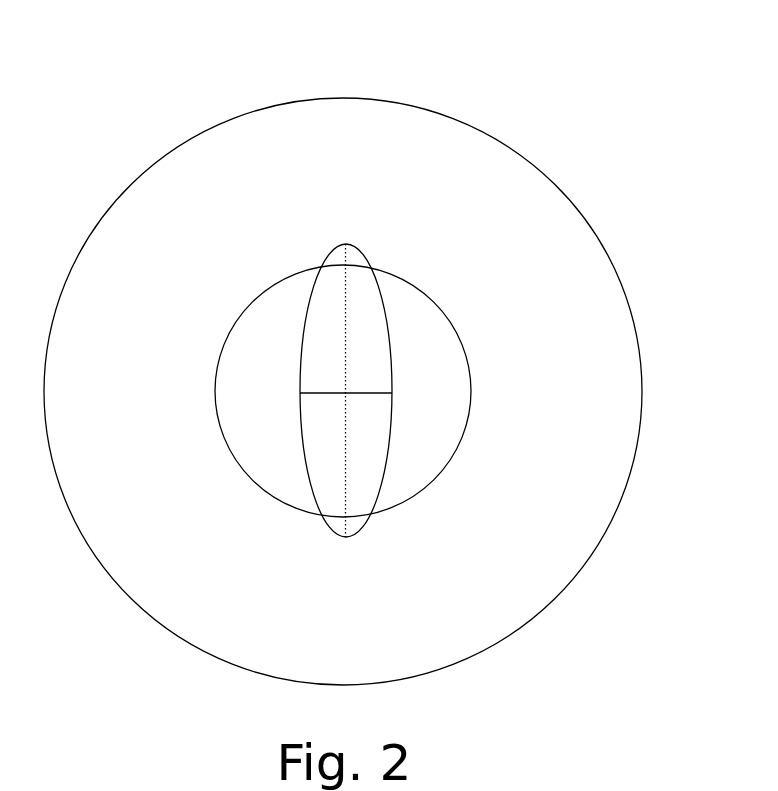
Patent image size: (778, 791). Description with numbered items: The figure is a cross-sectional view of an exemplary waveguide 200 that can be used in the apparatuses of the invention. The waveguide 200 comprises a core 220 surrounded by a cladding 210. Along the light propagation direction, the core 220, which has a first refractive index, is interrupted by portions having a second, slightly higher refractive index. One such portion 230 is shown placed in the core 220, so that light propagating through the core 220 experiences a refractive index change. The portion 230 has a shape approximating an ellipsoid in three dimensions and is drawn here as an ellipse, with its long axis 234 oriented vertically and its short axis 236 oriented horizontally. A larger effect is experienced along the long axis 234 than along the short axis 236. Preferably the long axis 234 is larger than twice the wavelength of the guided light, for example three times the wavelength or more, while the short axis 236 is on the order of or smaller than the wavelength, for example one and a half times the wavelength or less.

The waveguide 200 is at (518, 108).
The cladding 210 is at (643, 378).
The core 220 is at (472, 418).
The portion 230 is at (350, 245).
The major axis 234 is at (351, 349).
The minor axis 236 is at (364, 393).